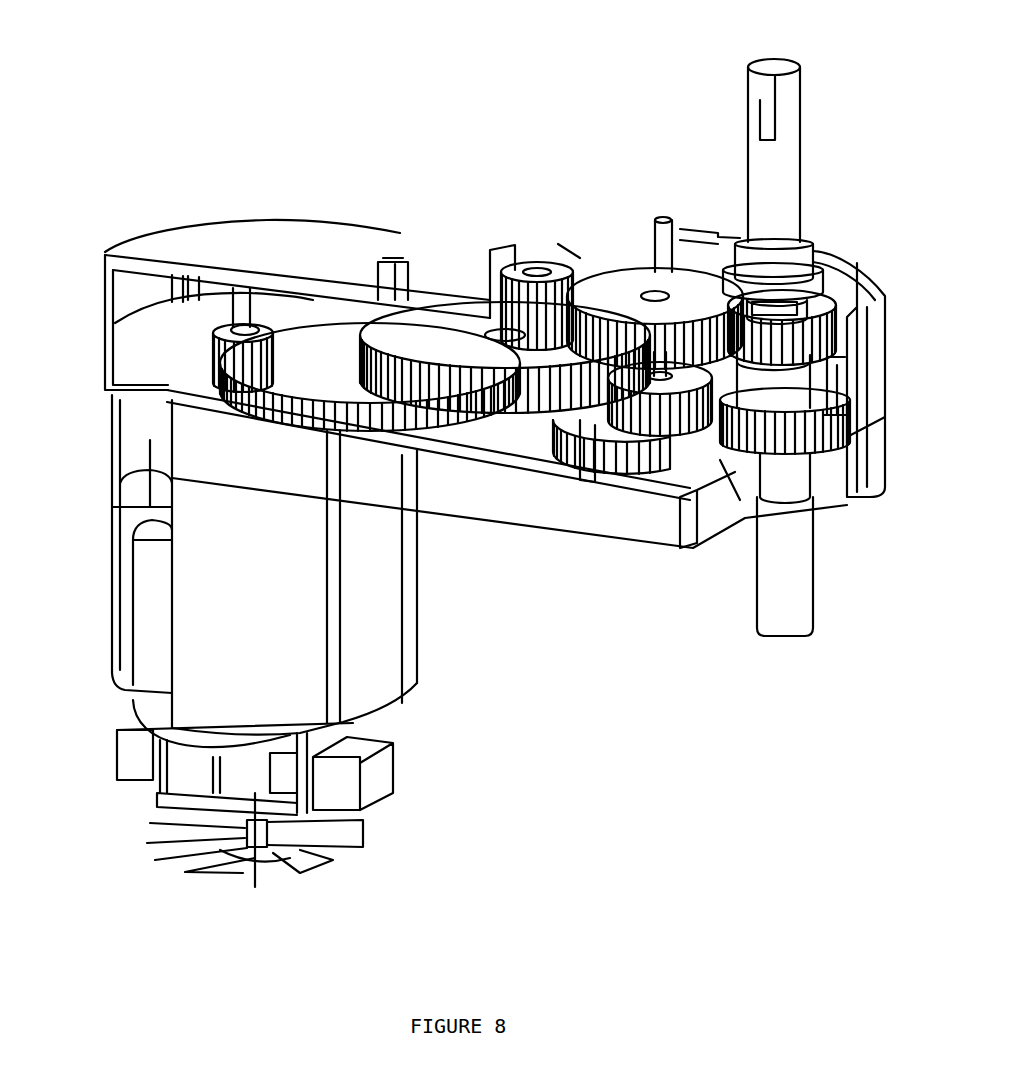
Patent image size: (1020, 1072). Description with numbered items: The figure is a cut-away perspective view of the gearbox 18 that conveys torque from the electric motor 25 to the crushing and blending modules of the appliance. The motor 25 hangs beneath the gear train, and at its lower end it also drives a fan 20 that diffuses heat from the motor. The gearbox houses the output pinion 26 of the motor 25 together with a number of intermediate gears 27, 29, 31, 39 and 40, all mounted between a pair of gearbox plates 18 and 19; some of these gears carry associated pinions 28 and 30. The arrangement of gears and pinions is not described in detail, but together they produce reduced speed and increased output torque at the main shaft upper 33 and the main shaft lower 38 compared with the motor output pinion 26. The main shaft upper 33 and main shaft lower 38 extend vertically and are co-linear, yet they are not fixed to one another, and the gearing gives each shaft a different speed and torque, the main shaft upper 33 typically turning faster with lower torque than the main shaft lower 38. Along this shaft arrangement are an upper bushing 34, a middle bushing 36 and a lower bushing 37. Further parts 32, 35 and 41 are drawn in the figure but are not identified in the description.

The gearbox plate 18 is at (177, 255).
The gearbox plate 19 is at (312, 605).
The fan 20 is at (303, 863).
The electric motor 25 is at (147, 650).
The output pinion 26 is at (228, 330).
The intermediate gear 27 is at (345, 355).
The pinion 28 is at (383, 260).
The intermediate gear 29 is at (470, 340).
The pinion 30 is at (530, 262).
The intermediate gear 31 is at (630, 268).
The gear shaft 32 is at (665, 240).
The main shaft upper 33 is at (782, 168).
The upper bushing 34 is at (790, 277).
The drive gear 35 is at (803, 313).
The middle bushing 36 is at (793, 483).
The lower bushing 37 is at (785, 393).
The main shaft lower 38 is at (780, 600).
The intermediate gear 39 is at (722, 455).
The intermediate gear 40 is at (668, 420).
The lower idler gear 41 is at (608, 455).